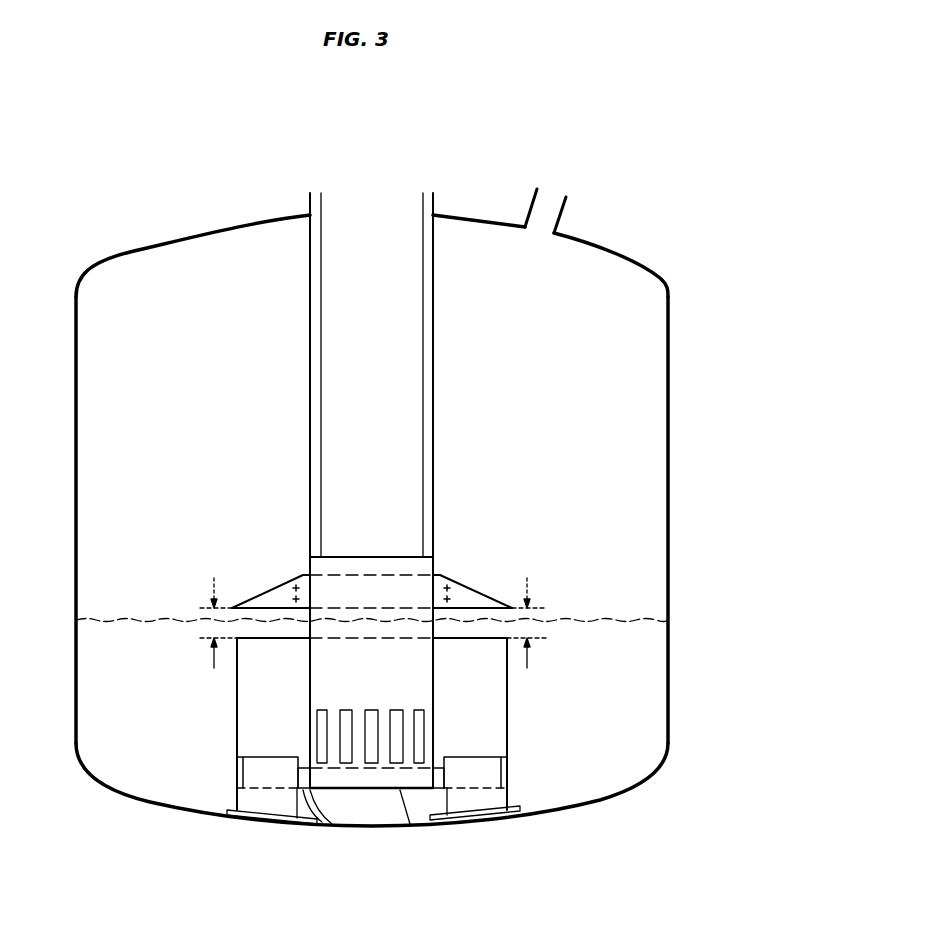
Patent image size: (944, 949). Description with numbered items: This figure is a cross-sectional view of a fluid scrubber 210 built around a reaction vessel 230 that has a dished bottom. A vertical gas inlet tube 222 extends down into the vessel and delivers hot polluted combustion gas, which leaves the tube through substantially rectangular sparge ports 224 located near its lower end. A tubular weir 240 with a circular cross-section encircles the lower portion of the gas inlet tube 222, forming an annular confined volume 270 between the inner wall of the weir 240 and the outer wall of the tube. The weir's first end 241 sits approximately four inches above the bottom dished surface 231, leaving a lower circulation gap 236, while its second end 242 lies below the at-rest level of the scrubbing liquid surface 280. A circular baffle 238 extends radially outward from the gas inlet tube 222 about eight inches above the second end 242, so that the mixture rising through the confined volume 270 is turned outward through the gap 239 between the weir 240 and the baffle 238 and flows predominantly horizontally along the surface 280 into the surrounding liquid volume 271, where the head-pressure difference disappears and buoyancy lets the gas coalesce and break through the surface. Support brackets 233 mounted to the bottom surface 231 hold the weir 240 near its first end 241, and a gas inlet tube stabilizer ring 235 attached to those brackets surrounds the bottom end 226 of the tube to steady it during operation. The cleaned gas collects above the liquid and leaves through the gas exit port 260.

The fluid scrubber 210 is at (634, 244).
The gas inlet tube 222 is at (433, 403).
The sparge ports 224 is at (433, 728).
The bottom end of the gas inlet tube 226 is at (401, 792).
The reaction vessel 230 is at (668, 470).
The bottom dished surface 231 is at (540, 815).
The support brackets 233 is at (300, 793).
The gas inlet tube stabilizer ring 235 is at (302, 790).
The lower circulation gap 236 is at (507, 797).
The baffle 238 is at (485, 593).
The gap 239 is at (214, 607).
The weir 240 is at (510, 683).
The first end of the weir 241 is at (510, 788).
The second end of the weir 242 is at (513, 640).
The gas exit port 260 is at (551, 193).
The confined volume 270 is at (292, 687).
The volume 271 is at (586, 717).
The scrubbing liquid surface 280 is at (648, 620).